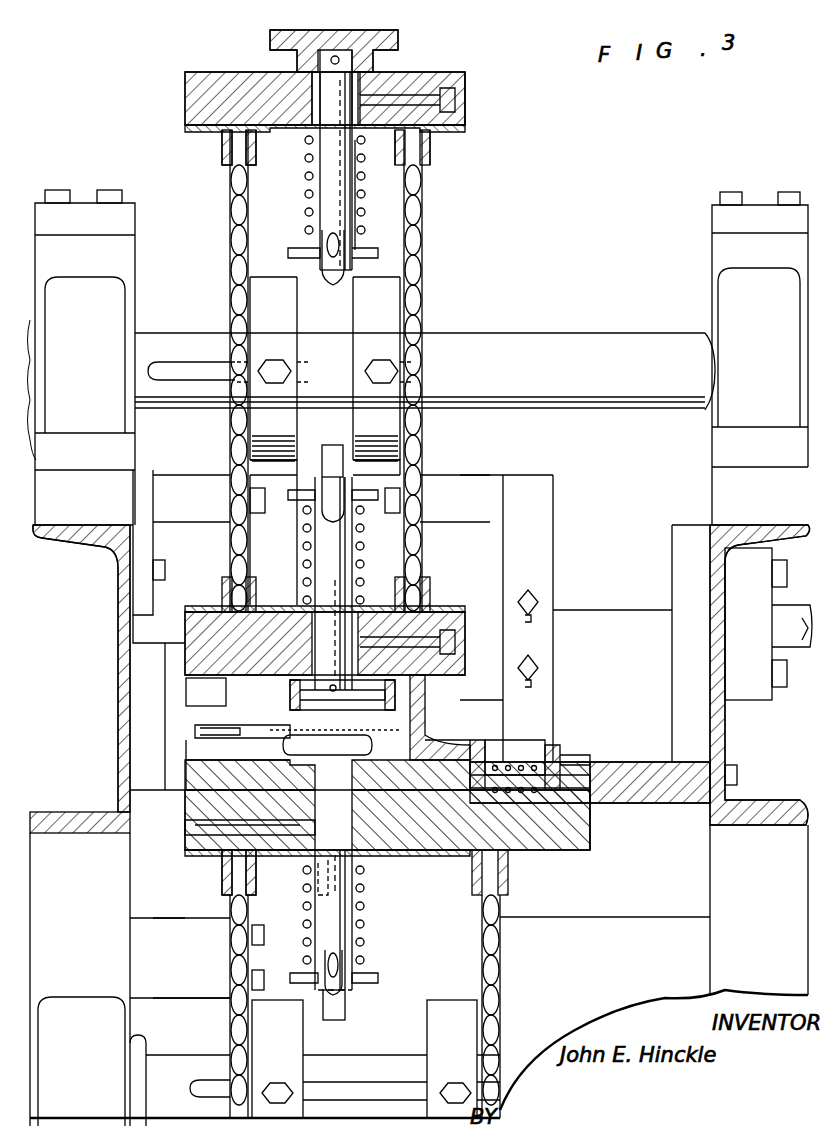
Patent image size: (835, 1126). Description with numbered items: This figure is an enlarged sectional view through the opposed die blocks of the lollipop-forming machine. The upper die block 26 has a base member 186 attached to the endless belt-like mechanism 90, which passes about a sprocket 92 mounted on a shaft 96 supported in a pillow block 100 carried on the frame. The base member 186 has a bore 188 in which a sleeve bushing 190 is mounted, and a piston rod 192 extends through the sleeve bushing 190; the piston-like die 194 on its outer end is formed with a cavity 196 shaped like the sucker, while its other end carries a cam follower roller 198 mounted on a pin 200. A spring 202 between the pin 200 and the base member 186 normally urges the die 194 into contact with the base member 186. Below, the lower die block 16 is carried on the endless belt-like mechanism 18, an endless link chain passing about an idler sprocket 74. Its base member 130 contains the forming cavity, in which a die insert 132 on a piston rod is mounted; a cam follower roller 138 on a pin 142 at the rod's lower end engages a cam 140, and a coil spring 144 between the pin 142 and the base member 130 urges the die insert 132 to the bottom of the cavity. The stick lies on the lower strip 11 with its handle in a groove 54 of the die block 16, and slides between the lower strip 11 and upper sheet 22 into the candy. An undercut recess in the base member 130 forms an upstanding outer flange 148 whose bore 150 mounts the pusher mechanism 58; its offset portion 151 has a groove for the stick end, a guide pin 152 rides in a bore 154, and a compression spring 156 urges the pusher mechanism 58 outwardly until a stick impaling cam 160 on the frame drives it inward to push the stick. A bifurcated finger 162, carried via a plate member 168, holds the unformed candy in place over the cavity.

The lower strip 11 is at (372, 737).
The lower die block 16 is at (608, 840).
The endless belt-like mechanism 18 is at (220, 884).
The upper sheet 22 is at (340, 732).
The upper die block 26 is at (505, 79).
The groove 54 is at (474, 740).
The pusher mechanism 58 is at (650, 762).
The idler sprocket 74 is at (248, 892).
The endless belt-like mechanism 90 is at (430, 147).
The sprocket 92 is at (425, 270).
The shaft 96 is at (540, 347).
The pillow block 100 is at (128, 292).
The base member 130 is at (375, 877).
The die insert 132 is at (285, 777).
The cam follower roller 138 is at (365, 950).
The cam 140 is at (348, 1010).
The pin 142 is at (372, 980).
The coil spring 144 is at (430, 892).
The outer flange 148 is at (568, 757).
The bore 150 is at (623, 764).
The offset portion 151 is at (546, 747).
The guide pin 152 is at (515, 766).
The bore 154 is at (438, 787).
The compression spring 156 is at (513, 807).
The stick impaling cam 160 is at (690, 827).
The bifurcated finger 162 is at (250, 722).
The plate member 168 is at (205, 725).
The base member 186 is at (470, 102).
The bore 188 is at (300, 94).
The sleeve bushing 190 is at (300, 142).
The piston rod 192 is at (370, 237).
The piston-like die 194 is at (400, 52).
The cavity 196 is at (370, 33).
The cam follower roller 198 is at (333, 282).
The pin 200 is at (290, 252).
The spring 202 is at (372, 202).